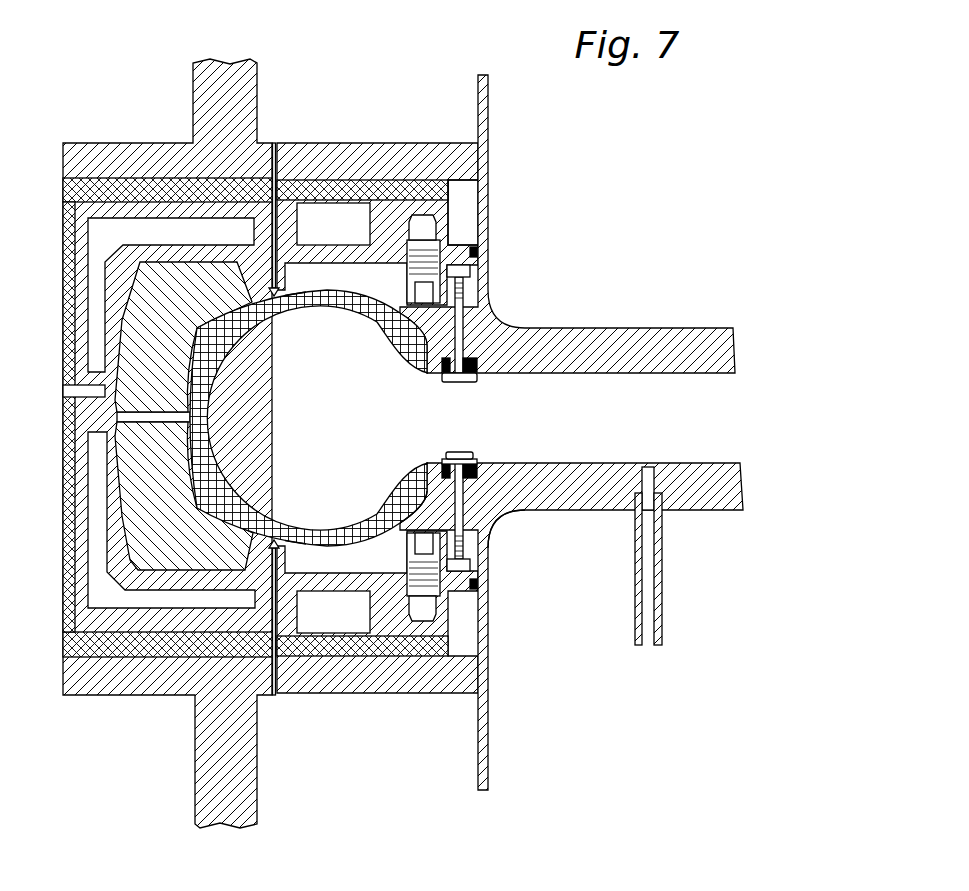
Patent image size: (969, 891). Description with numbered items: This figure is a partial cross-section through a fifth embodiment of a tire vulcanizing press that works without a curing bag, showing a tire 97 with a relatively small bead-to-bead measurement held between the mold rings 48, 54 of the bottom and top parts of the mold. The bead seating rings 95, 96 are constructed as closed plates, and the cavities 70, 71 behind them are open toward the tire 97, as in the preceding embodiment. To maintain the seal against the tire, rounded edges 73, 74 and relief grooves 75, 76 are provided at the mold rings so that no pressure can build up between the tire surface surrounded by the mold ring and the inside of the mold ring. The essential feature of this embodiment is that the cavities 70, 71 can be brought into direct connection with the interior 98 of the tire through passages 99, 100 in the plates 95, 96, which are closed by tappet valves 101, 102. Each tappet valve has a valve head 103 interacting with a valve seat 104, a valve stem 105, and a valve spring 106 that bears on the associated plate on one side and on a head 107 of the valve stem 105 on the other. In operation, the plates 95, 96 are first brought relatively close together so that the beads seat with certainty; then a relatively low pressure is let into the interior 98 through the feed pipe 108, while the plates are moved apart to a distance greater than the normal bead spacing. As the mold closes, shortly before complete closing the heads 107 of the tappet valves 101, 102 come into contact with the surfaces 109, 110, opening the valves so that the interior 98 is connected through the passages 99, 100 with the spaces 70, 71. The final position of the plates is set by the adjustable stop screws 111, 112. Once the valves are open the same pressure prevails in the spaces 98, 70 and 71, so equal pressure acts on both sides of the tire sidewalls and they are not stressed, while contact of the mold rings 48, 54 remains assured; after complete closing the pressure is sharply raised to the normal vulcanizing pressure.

The mold ring 48 is at (158, 545).
The mold ring 54 is at (165, 282).
The cavity 70 is at (334, 560).
The cavity 71 is at (328, 276).
The rounded edge 73 is at (297, 304).
The rounded edge 74 is at (291, 537).
The relief groove 75 is at (272, 302).
The relief groove 76 is at (275, 533).
The bead seating ring 95 is at (629, 345).
The bead seating ring 96 is at (600, 488).
The tire 97 is at (200, 422).
The interior of the tire 98 is at (364, 478).
The passage 99 is at (472, 327).
The passage 100 is at (507, 468).
The tappet valve 101 is at (476, 378).
The tappet valve 102 is at (464, 453).
The valve head 103 is at (450, 450).
The valve seat 104 is at (442, 458).
The valve stem 105 is at (506, 523).
The valve spring 106 is at (465, 547).
The head of the valve stem 107 is at (478, 567).
The feed pipe 108 is at (642, 562).
The surface 109 is at (378, 263).
The surface 110 is at (397, 650).
The adjustable stop screw 111 is at (450, 244).
The adjustable stop screw 112 is at (445, 597).